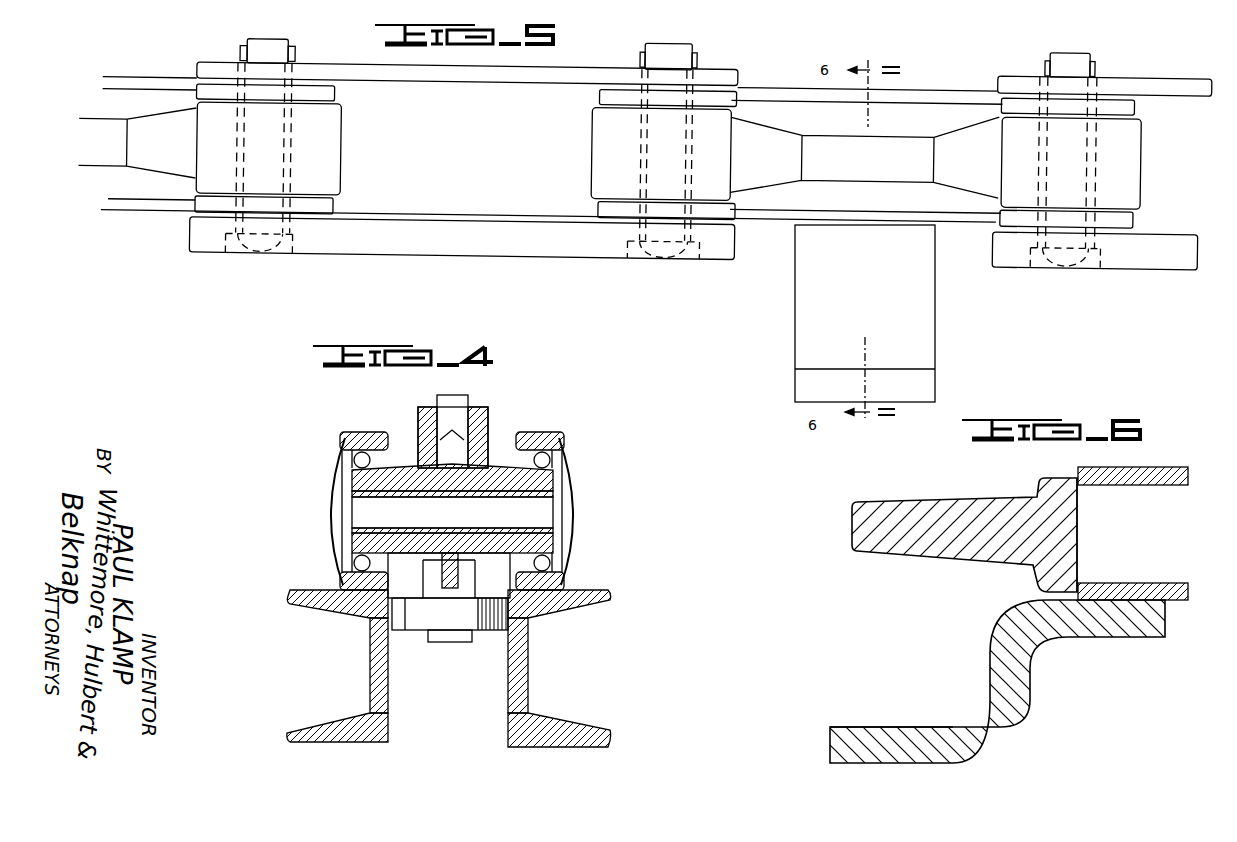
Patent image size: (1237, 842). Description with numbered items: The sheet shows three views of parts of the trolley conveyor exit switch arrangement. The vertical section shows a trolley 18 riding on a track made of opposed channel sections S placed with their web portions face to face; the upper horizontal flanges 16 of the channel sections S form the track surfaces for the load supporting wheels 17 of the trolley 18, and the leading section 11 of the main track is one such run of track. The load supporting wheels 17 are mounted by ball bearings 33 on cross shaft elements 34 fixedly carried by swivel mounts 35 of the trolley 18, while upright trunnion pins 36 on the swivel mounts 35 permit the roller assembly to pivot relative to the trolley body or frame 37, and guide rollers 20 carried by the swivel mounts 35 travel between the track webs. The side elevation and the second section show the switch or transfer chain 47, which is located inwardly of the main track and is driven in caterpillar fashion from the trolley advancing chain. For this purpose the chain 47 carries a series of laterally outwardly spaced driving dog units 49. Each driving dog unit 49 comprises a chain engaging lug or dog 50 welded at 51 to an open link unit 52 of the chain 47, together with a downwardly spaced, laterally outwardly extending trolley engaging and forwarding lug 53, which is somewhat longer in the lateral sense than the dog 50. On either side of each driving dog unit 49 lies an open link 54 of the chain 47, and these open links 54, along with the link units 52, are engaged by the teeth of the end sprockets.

In FIG. 4, the leading section of main trolley supporting track 11 is at (440, 663).
In FIG. 4, the upper horizontal flanges 16 is at (315, 590).
In FIG. 4, the load supporting wheels 17 is at (340, 443).
In FIG. 4, the trolley 18 is at (588, 546).
In FIG. 4, the guide rollers 20 is at (486, 630).
In FIG. 4, the ball bearings 33 is at (556, 478).
In FIG. 4, the cross shaft elements 34 is at (527, 511).
In FIG. 4, the swivel mounts 35 is at (445, 530).
In FIG. 4, the upright trunnion pins 36 is at (490, 410).
In FIG. 4, the trolley body or frame 37 is at (490, 440).
In FIG. 5, the switch or transfer chain 47 is at (616, 258).
In FIG. 5, the driving dog units 49 is at (790, 300).
In FIG. 6, the driving dog units 49 is at (997, 681).
In FIG. 5, the chain engaging lug or dog 50 is at (110, 157).
In FIG. 6, the chain engaging lug or dog 50 is at (964, 520).
In FIG. 6, the weld 51 is at (1076, 474).
In FIG. 5, the open link unit 52 is at (167, 209).
In FIG. 6, the open link unit 52 is at (1140, 467).
In FIG. 5, the trolley engaging and forwarding lug 53 is at (920, 390).
In FIG. 6, the trolley engaging and forwarding lug 53 is at (868, 727).
In FIG. 5, the open link 54 is at (425, 238).
In FIG. 4, the channel sections S is at (508, 712).